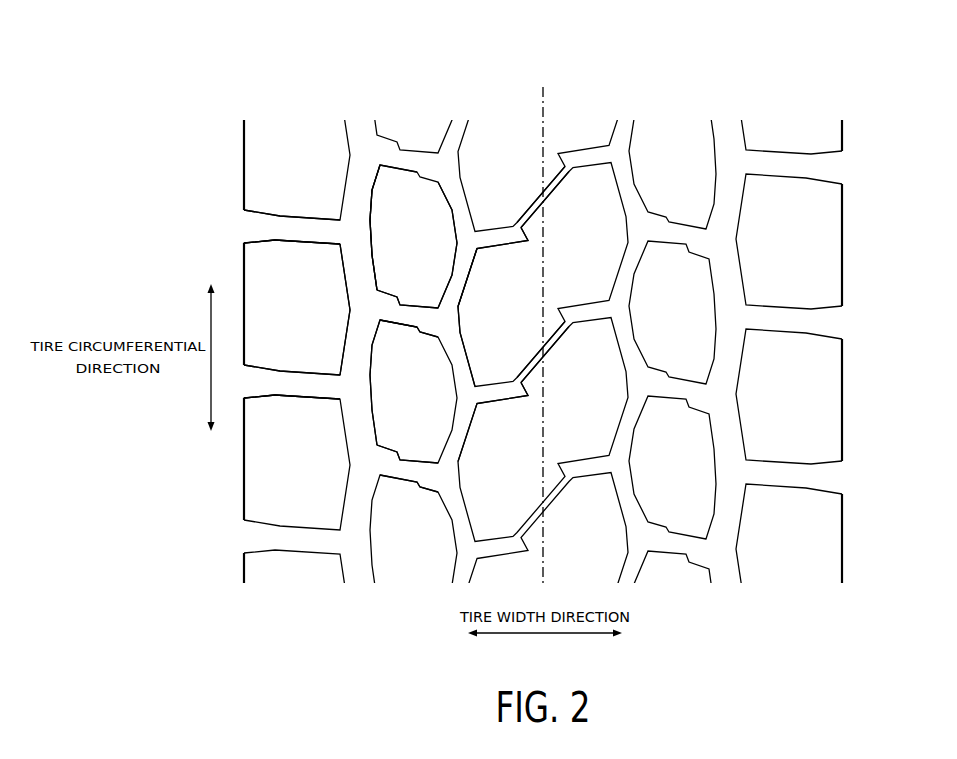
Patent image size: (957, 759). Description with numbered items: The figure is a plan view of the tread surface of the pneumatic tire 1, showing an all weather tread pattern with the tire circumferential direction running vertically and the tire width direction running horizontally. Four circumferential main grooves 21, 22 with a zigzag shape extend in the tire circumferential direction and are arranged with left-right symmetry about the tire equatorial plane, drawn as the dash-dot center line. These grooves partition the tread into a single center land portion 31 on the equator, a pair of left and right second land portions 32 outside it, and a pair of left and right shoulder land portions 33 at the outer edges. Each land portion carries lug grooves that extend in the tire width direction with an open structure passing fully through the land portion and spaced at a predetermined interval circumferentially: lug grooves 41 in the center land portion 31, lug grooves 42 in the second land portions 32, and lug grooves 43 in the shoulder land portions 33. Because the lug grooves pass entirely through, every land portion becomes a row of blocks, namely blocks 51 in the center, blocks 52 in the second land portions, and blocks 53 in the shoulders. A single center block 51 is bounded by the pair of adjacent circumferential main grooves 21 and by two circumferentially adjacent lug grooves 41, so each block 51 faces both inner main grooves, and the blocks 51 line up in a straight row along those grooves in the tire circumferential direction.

The pneumatic tire 1 is at (818, 42).
The circumferential main groove 21 is at (458, 130).
The circumferential main groove 22 is at (360, 130).
The center land portion 31 is at (593, 106).
The second land portion 32 is at (419, 105).
The shoulder land portion 33 is at (299, 106).
The lug groove 41 is at (521, 203).
The lug groove 42 is at (410, 317).
The lug groove 43 is at (292, 230).
The block 51 is at (489, 280).
The block 52 is at (386, 210).
The block 53 is at (251, 272).